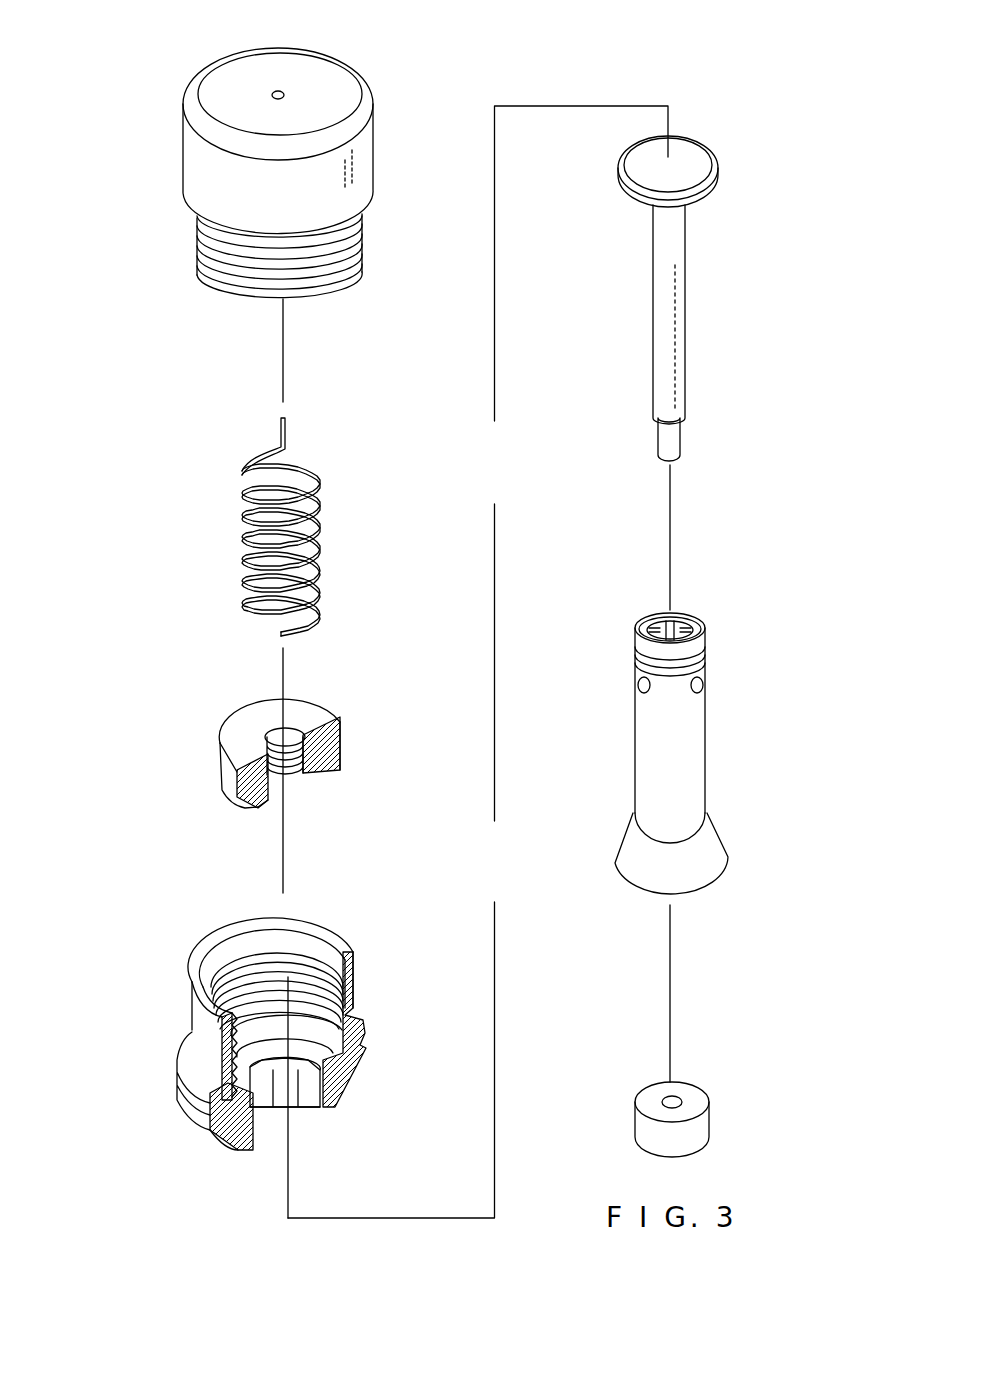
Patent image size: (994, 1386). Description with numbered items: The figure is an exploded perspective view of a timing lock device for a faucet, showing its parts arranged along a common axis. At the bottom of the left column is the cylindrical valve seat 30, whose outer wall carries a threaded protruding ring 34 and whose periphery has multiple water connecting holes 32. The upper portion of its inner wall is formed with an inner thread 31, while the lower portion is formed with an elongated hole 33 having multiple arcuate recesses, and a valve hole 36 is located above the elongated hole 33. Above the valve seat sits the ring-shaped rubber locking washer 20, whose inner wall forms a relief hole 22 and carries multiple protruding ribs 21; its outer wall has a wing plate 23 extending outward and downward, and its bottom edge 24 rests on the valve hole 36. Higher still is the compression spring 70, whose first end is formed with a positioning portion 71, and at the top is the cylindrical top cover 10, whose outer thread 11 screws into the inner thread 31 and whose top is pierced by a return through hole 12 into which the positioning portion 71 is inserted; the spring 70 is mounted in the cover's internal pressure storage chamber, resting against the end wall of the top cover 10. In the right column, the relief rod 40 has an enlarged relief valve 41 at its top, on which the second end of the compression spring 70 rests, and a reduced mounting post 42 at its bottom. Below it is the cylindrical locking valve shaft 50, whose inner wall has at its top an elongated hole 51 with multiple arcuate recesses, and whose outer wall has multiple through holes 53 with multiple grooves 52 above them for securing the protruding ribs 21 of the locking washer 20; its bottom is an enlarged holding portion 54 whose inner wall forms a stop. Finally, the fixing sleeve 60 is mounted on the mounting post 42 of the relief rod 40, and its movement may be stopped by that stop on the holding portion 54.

The top cover 10 is at (235, 166).
The outer thread 11 is at (197, 238).
The return through hole 12 is at (272, 94).
The locking washer 20 is at (254, 771).
The protruding ribs 21 is at (288, 773).
The relief hole 22 is at (302, 707).
The wing plate 23 is at (220, 773).
The bottom edge 24 is at (258, 807).
The valve seat 30 is at (256, 1049).
The inner thread 31 is at (240, 982).
The water connecting holes 32 is at (352, 1017).
The elongated hole 33 is at (310, 1097).
The threaded protruding ring 34 is at (177, 1077).
The valve hole 36 is at (306, 1071).
The relief rod 40 is at (717, 298).
The relief valve 41 is at (685, 167).
The mounting post 42 is at (675, 448).
The locking valve shaft 50 is at (713, 738).
The elongated hole 51 is at (688, 612).
The grooves 52 is at (645, 668).
The through holes 53 is at (703, 680).
The holding portion 54 is at (717, 863).
The fixing sleeve 60 is at (695, 1098).
The compression spring 70 is at (226, 491).
The positioning portion 71 is at (282, 418).